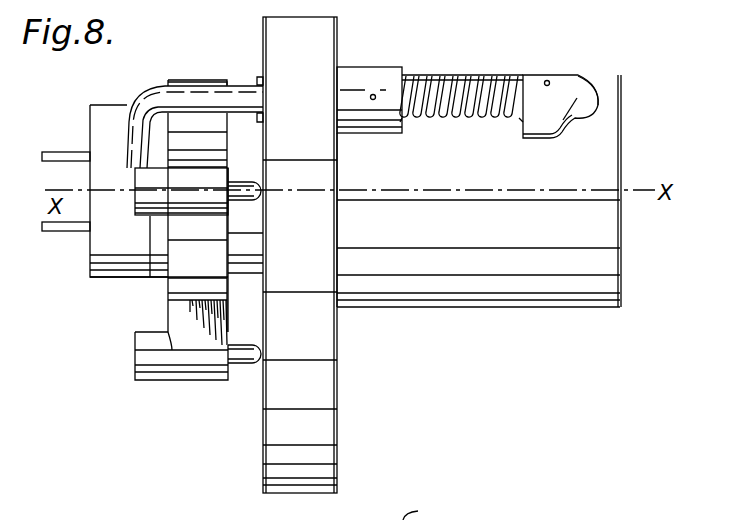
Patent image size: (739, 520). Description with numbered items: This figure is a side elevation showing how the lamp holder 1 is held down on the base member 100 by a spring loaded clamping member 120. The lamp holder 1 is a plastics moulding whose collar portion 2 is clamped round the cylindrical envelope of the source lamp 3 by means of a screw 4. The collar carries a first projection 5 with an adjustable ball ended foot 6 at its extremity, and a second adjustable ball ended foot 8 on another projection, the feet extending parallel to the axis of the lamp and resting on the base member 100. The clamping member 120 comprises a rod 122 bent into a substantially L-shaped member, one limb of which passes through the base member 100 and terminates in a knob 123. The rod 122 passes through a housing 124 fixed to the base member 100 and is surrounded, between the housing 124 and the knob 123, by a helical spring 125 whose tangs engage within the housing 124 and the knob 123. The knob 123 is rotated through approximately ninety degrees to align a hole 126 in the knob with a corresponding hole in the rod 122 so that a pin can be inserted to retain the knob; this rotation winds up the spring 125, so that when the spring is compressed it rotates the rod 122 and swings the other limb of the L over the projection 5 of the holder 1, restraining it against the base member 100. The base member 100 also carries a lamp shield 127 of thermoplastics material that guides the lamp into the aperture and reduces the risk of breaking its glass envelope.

The lamp holder 1 is at (177, 387).
The collar portion 2 is at (187, 258).
The source lamp 3 is at (157, 277).
The screw 4 is at (66, 156).
The first projection 5 is at (66, 226).
The adjustable ball ended foot 6 is at (245, 185).
The second adjustable ball ended foot 8 is at (248, 362).
The base member 100 is at (352, 410).
The spring loaded clamping member 120 is at (147, 93).
The rod 122 is at (242, 92).
The knob 123 is at (593, 98).
The housing 124 is at (378, 117).
The helical spring 125 is at (485, 78).
The hole 126 is at (560, 88).
The lamp shield 127 is at (490, 308).